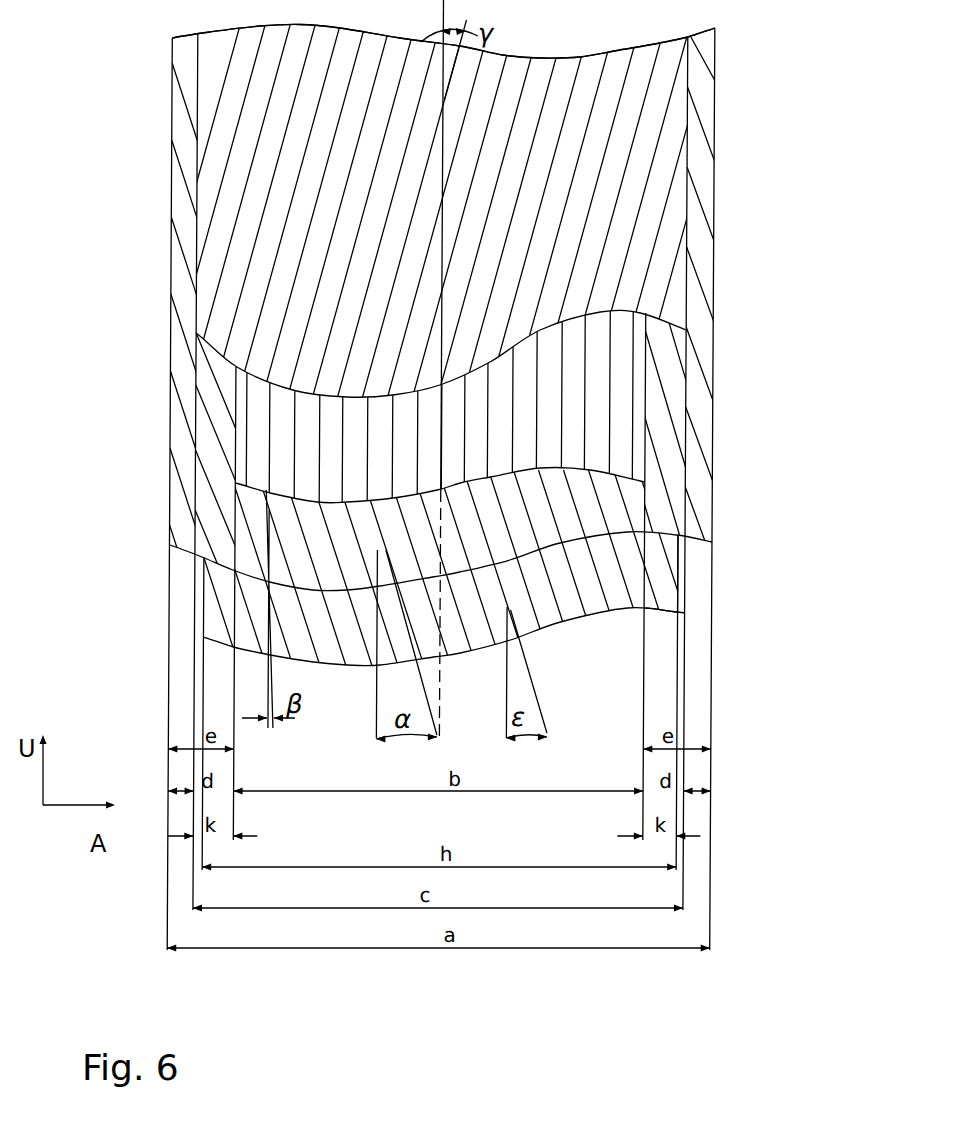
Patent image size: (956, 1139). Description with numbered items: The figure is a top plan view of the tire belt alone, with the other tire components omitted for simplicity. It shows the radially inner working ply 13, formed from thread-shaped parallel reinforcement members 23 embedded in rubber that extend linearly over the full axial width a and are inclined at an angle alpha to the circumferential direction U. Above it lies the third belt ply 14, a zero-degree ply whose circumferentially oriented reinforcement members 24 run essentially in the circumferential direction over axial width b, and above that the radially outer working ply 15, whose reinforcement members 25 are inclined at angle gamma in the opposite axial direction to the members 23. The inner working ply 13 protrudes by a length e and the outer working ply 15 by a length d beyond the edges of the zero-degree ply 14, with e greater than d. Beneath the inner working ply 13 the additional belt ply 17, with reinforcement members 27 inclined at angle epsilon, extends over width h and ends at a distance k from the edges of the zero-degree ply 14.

The radially inner belt ply 13 is at (692, 235).
The third belt ply 14 is at (618, 437).
The radially outer belt ply 15 is at (652, 200).
The belt ply 17 is at (587, 597).
The reinforcement members 23 is at (203, 477).
The central layer 24 is at (293, 442).
The reinforcement members 25 is at (215, 200).
The reinforcement members 27 is at (303, 617).